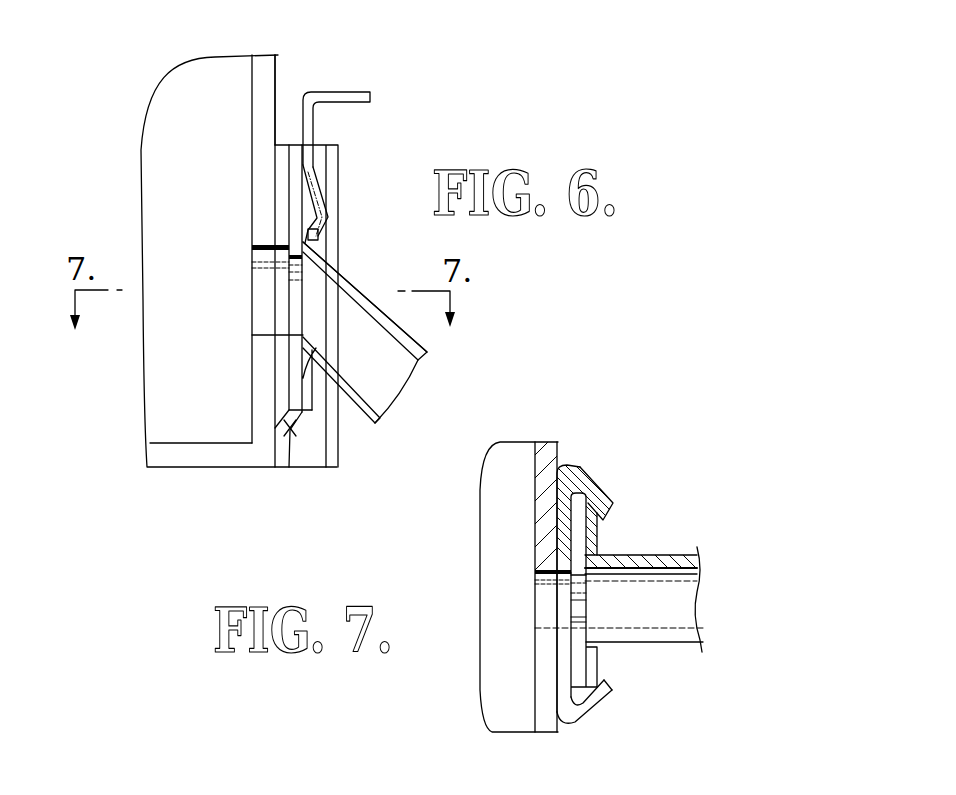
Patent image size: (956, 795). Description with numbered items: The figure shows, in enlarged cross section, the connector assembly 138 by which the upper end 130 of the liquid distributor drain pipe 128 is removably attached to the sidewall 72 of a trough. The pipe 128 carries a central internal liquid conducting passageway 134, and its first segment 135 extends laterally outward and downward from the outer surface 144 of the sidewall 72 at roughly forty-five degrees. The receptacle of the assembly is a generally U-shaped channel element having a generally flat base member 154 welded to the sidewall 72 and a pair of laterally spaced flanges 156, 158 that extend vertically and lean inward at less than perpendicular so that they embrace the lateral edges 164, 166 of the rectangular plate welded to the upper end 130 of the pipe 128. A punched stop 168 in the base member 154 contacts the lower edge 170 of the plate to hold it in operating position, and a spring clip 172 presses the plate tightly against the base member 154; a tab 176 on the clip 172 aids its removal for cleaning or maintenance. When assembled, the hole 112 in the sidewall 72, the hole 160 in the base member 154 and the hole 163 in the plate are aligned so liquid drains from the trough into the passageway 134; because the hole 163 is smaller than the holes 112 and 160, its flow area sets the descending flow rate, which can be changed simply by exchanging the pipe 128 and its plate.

In FIG. 6, the sidewall 72 is at (268, 70).
In FIG. 7, the sidewall 72 is at (547, 446).
In FIG. 6, the outer surface of sidewall 144 is at (275, 95).
In FIG. 6, the tab 176 is at (357, 92).
In FIG. 6, the connector assembly 138 is at (378, 128).
In FIG. 6, the spring clip 172 is at (317, 194).
In FIG. 7, the spring clip 172 is at (596, 663).
In FIG. 6, the upper end of pipe 130 is at (316, 243).
In FIG. 6, the first segment of pipe 135 is at (363, 289).
In FIG. 6, the liquid distributor drain pipe 128 is at (400, 309).
In FIG. 7, the liquid distributor drain pipe 128 is at (672, 542).
In FIG. 6, the central internal liquid conducting passageway 134 is at (399, 383).
In FIG. 6, the hole in sidewall 112 is at (263, 247).
In FIG. 7, the hole in sidewall 112 is at (552, 570).
In FIG. 6, the hole in base member 160 is at (282, 327).
In FIG. 7, the hole in base member 160 is at (567, 577).
In FIG. 6, the hole in plate 163 is at (297, 313).
In FIG. 6, the lower edge of plate 170 is at (292, 412).
In FIG. 6, the punched stop 168 is at (290, 428).
In FIG. 7, the lateral edge of plate 166 is at (577, 492).
In FIG. 7, the flange 158 is at (597, 488).
In FIG. 7, the base member 154 is at (565, 667).
In FIG. 7, the lateral edge of plate 164 is at (570, 702).
In FIG. 7, the flange 156 is at (602, 690).